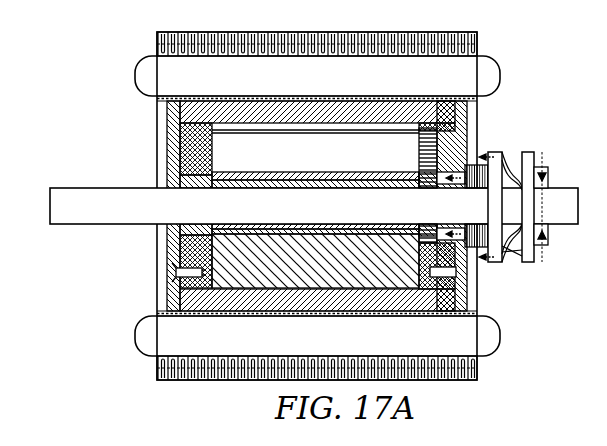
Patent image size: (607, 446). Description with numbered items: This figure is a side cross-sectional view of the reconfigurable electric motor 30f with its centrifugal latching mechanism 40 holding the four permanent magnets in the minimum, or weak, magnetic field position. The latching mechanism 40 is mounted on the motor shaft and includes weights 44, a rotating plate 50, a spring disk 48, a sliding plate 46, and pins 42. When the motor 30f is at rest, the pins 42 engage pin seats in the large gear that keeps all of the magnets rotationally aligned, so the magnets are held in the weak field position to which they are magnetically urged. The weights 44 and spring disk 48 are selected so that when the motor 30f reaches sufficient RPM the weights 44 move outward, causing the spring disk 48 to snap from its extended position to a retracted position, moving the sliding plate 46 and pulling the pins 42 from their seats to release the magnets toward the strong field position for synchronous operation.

The motor 30f is at (314, 206).
The centrifugal latching mechanism 40 is at (534, 318).
The pins 42 is at (473, 163).
The weights 44 is at (549, 166).
The sliding plate 46 is at (501, 160).
The spring disk 48 is at (513, 250).
The rotating plate 50 is at (527, 254).